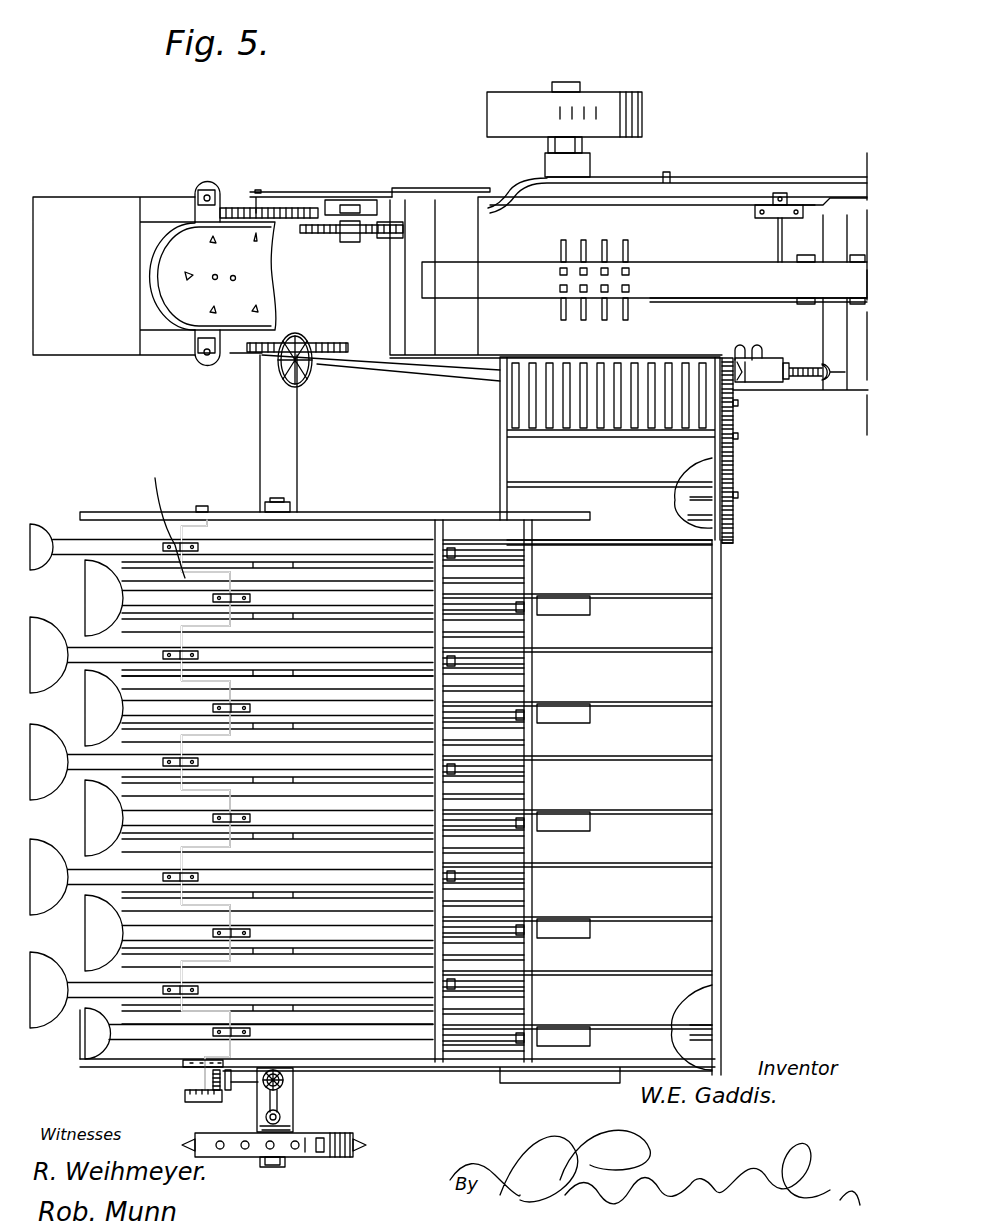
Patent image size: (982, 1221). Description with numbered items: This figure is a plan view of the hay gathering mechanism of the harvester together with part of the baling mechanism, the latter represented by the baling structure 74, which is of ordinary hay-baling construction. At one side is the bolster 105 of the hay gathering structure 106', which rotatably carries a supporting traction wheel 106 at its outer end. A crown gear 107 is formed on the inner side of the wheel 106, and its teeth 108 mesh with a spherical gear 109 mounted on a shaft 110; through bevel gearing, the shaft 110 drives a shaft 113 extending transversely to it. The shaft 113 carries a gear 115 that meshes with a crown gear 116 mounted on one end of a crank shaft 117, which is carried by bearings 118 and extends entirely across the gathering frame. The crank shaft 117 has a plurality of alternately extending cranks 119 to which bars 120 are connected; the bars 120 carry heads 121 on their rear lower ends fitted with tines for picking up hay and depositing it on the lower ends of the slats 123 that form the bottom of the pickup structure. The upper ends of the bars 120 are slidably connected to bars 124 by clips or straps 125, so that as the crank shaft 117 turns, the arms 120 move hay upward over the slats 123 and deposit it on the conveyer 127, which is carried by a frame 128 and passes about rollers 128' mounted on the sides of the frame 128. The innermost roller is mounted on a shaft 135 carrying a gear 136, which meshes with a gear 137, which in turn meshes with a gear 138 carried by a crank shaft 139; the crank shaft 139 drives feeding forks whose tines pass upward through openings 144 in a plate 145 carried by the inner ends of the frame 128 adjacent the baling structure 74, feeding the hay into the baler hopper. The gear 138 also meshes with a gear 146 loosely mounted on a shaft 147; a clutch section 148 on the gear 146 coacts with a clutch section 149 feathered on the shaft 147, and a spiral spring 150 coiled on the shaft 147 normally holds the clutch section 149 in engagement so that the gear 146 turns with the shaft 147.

The baling structure 74 is at (688, 222).
The bolster 105 is at (292, 1102).
The supporting traction wheel 106 is at (306, 1131).
The hay gathering structure 106' is at (277, 661).
The crown gear 107 is at (280, 1140).
The teeth 108 is at (285, 1130).
The spherical gear 109 is at (258, 1118).
The shaft 110 is at (270, 1103).
The shaft 113 is at (250, 1076).
The gear 115 is at (213, 1080).
The crown gear 116 is at (188, 1098).
The crank shaft 117 is at (160, 517).
The bearings 118 is at (205, 510).
The cranks 119 is at (237, 730).
The bars 120 is at (340, 530).
The heads 121 is at (60, 743).
The slats 123 is at (398, 560).
The bars 124 is at (470, 545).
The clips or straps 125 is at (560, 600).
The conveyer 127 is at (680, 670).
The frame 128 is at (436, 811).
The rollers 128' is at (752, 764).
The shaft 135 is at (738, 495).
The gear 136 is at (735, 528).
The gear 137 is at (738, 428).
The gear 138 is at (722, 410).
The crank shaft 139 is at (738, 403).
The openings 144 is at (538, 397).
The plate 145 is at (520, 388).
The gear 146 is at (722, 362).
The shaft 147 is at (805, 368).
The clutch section 148 is at (737, 370).
The clutch section 149 is at (765, 365).
The spiral spring 150 is at (802, 378).